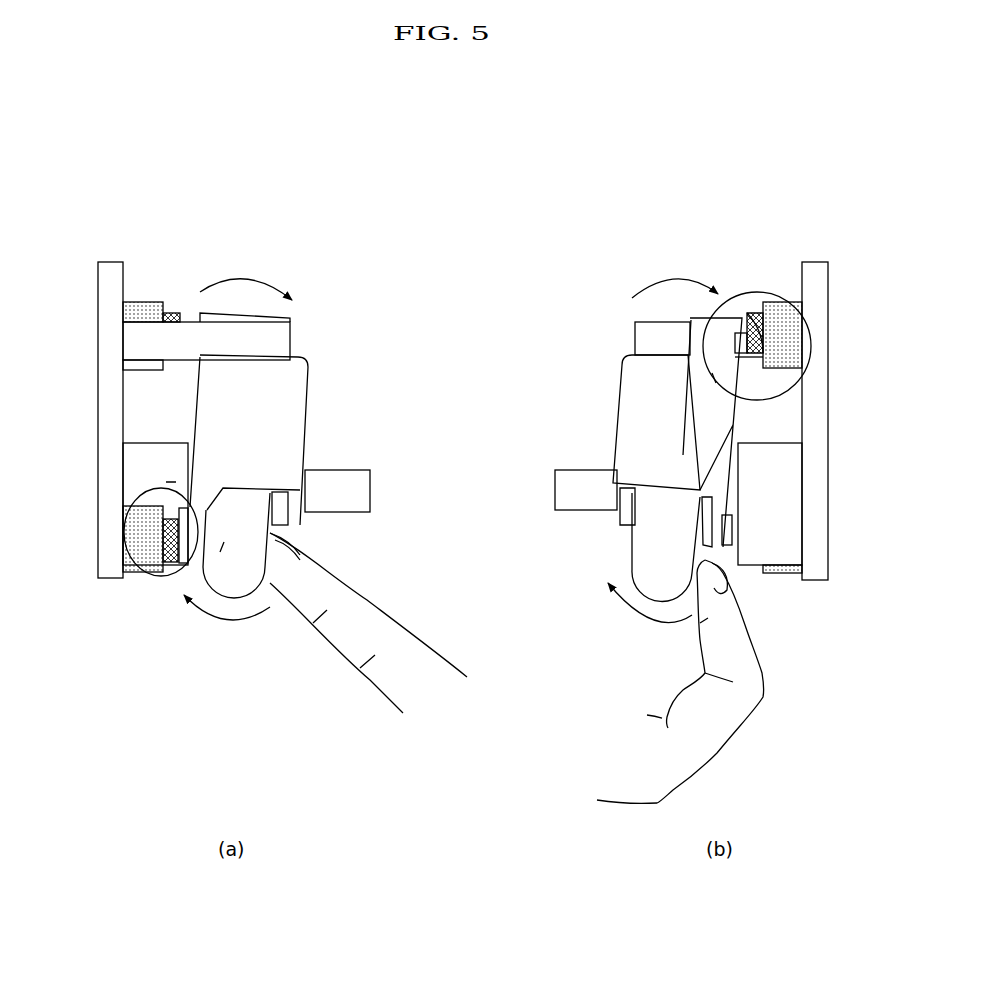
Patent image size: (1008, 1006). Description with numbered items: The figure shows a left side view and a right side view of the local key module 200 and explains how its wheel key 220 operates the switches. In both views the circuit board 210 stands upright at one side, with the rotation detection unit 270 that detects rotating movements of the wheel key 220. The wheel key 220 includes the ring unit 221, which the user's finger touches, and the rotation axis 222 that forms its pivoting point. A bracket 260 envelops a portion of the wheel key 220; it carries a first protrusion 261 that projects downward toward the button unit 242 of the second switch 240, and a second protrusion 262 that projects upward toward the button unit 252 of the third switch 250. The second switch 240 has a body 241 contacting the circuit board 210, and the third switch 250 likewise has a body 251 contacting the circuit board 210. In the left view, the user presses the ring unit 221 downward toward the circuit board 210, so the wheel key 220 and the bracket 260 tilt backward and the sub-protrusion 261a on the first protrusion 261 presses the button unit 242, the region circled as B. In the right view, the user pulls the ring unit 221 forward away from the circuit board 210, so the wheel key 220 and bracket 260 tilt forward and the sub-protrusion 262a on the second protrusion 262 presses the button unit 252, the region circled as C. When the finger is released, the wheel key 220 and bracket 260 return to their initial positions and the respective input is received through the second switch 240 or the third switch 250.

The local key module 200 is at (333, 133).
The circuit board 210 is at (116, 265).
The wheel key 220 is at (283, 611).
The ring unit 221 is at (237, 588).
The rotation axis 222 is at (337, 477).
The second switch 240 is at (170, 665).
The body 241 is at (140, 573).
The button unit 242 is at (173, 557).
The third switch 250 is at (230, 212).
The body 251 is at (143, 306).
The button unit 252 is at (173, 315).
The bracket 260 is at (283, 390).
The first protrusion 261 is at (200, 535).
The sub-protrusion 261a is at (183, 507).
The second protrusion 262 is at (693, 348).
The sub-protrusion 262a is at (750, 347).
The rotation detection unit 270 is at (195, 580).
The detail region B is at (140, 523).
The detail region C is at (800, 312).